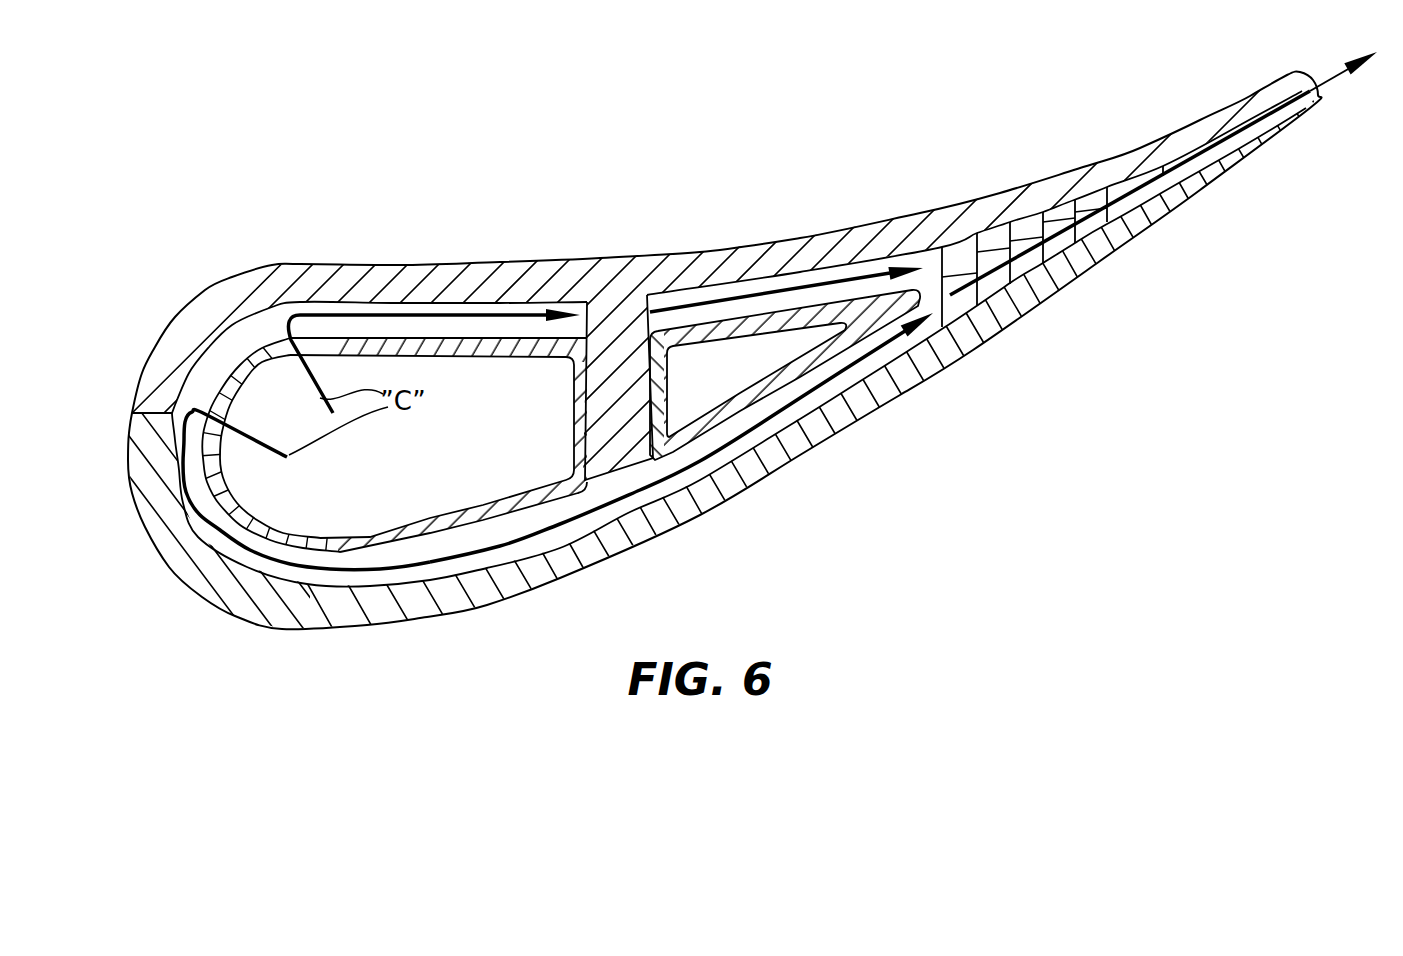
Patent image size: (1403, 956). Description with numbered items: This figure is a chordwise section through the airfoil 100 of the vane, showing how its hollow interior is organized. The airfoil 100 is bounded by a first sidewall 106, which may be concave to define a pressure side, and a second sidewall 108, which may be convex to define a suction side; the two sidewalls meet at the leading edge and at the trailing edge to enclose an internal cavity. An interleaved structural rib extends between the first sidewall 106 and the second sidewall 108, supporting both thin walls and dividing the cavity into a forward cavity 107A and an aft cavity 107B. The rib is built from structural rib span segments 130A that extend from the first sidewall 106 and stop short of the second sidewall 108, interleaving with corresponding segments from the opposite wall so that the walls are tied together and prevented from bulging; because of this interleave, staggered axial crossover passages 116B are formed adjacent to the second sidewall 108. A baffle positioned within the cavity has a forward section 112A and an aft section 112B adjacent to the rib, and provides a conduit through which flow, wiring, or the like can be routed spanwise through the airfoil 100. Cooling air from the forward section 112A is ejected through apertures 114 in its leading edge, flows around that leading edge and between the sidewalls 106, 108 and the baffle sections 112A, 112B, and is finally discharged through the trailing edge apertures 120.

The airfoil 100 is at (502, 175).
The first sidewall 106 is at (693, 267).
The forward cavity 107A is at (481, 300).
The aft cavity 107B is at (813, 280).
The second sidewall 108 is at (760, 475).
The forward section of baffle 112A is at (373, 547).
The aft section of baffle 112B is at (790, 373).
The apertures 114 is at (232, 390).
The axial crossover passages 116B is at (627, 503).
The trailing edge apertures 120 is at (1198, 158).
The structural rib span segments 130A is at (627, 407).